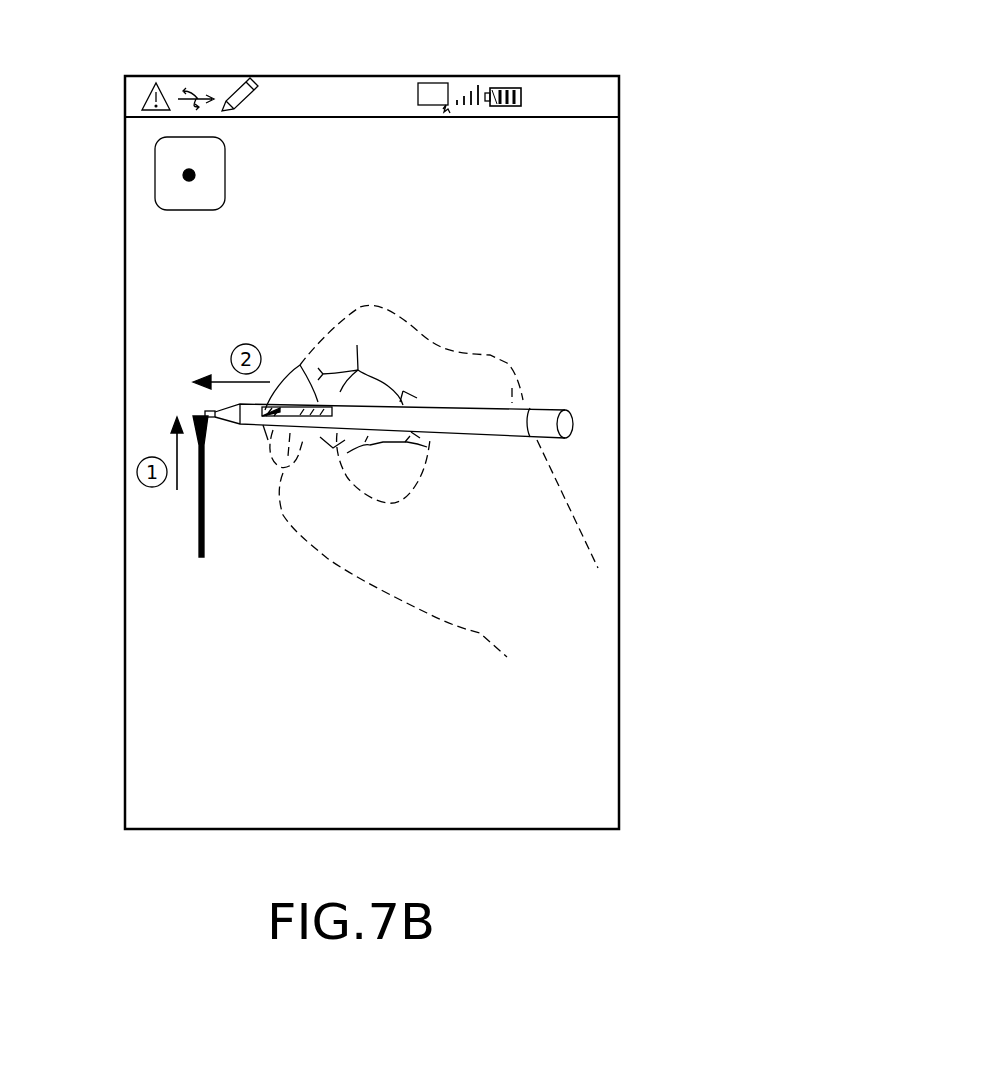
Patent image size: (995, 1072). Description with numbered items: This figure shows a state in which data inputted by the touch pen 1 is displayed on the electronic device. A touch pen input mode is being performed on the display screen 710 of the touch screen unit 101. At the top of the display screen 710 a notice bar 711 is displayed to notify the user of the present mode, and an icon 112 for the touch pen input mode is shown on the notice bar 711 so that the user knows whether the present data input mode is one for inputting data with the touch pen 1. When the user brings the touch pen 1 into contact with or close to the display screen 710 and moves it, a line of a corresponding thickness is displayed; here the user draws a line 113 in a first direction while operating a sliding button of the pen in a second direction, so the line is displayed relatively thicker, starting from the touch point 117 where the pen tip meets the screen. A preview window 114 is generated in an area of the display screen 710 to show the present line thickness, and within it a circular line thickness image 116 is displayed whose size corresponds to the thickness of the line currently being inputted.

The touch screen unit 101 is at (619, 289).
The notice bar 711 is at (364, 95).
The icon 112 is at (233, 93).
The preview window 114 is at (155, 189).
The point indicator 116 is at (175, 165).
The display screen 710 is at (522, 234).
The touch point 117 is at (205, 414).
The drawn line 113 is at (199, 517).
The touch pen 1 is at (252, 440).